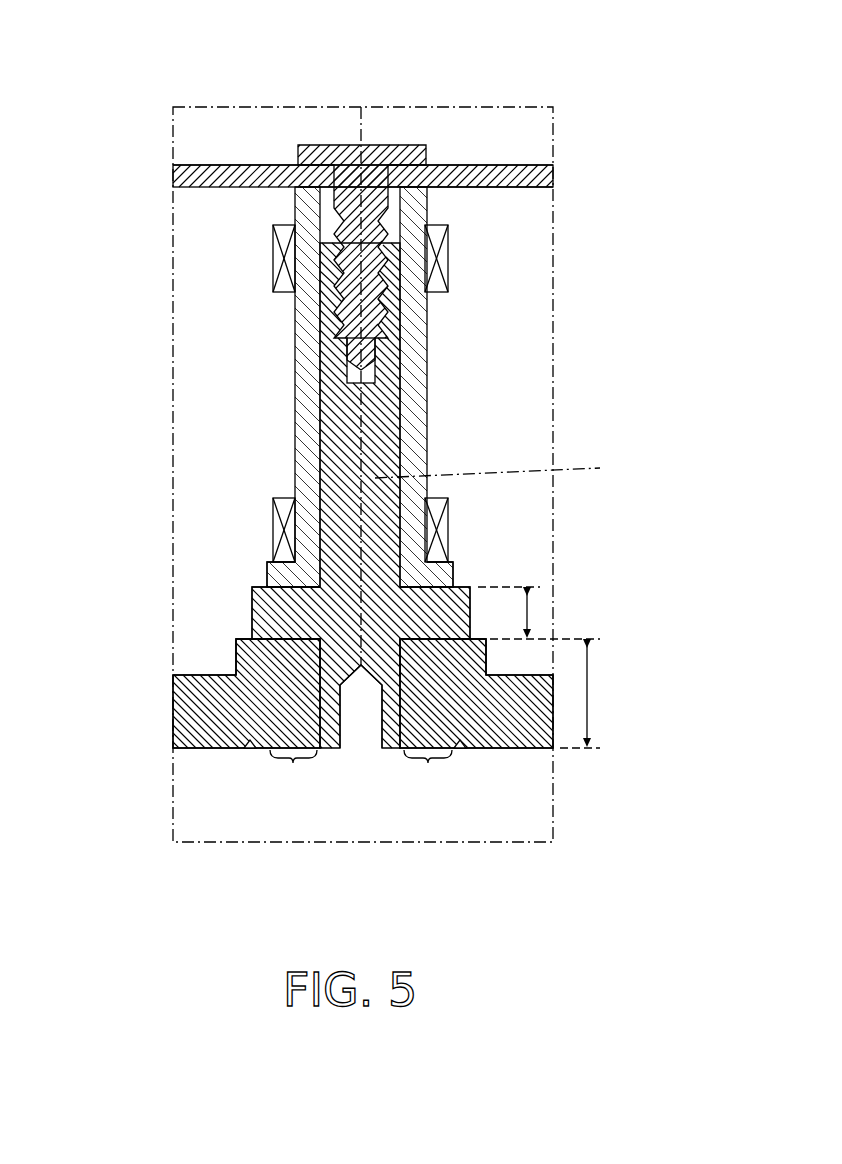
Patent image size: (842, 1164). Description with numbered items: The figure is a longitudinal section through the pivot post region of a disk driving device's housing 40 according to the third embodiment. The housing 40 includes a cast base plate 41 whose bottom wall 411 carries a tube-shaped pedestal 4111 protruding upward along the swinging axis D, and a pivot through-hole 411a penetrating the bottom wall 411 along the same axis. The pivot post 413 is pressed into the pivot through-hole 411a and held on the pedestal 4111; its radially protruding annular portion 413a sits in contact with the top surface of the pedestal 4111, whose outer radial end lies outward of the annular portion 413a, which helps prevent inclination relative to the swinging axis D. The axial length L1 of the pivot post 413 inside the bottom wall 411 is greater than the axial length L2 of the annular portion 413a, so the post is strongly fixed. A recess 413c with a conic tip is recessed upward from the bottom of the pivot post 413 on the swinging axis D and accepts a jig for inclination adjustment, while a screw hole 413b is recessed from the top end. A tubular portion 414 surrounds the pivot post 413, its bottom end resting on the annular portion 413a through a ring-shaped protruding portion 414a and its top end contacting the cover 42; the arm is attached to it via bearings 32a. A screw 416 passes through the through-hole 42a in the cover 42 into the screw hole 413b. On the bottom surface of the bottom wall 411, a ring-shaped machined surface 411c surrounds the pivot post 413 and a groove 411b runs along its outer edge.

The housing 40 is at (173, 165).
The base plate 41 is at (178, 728).
The bottom wall 411 is at (175, 687).
The pedestal 4111 is at (236, 647).
The pivot through-hole 411a is at (255, 743).
The groove 411b is at (465, 748).
The machined surface 411c is at (359, 774).
The pivot post 413 is at (320, 405).
The annular portion 413a is at (252, 612).
The screw hole 413b is at (335, 330).
The recess 413c is at (382, 690).
The tubular portion 414 is at (427, 392).
The protruding portion 414a is at (453, 570).
The screw 416 is at (332, 145).
The cover 42 is at (553, 177).
The through-hole 42a is at (458, 187).
The bearing 32a is at (273, 256).
The swinging axis D is at (503, 473).
The length L1 is at (565, 693).
The length L2 is at (533, 610).